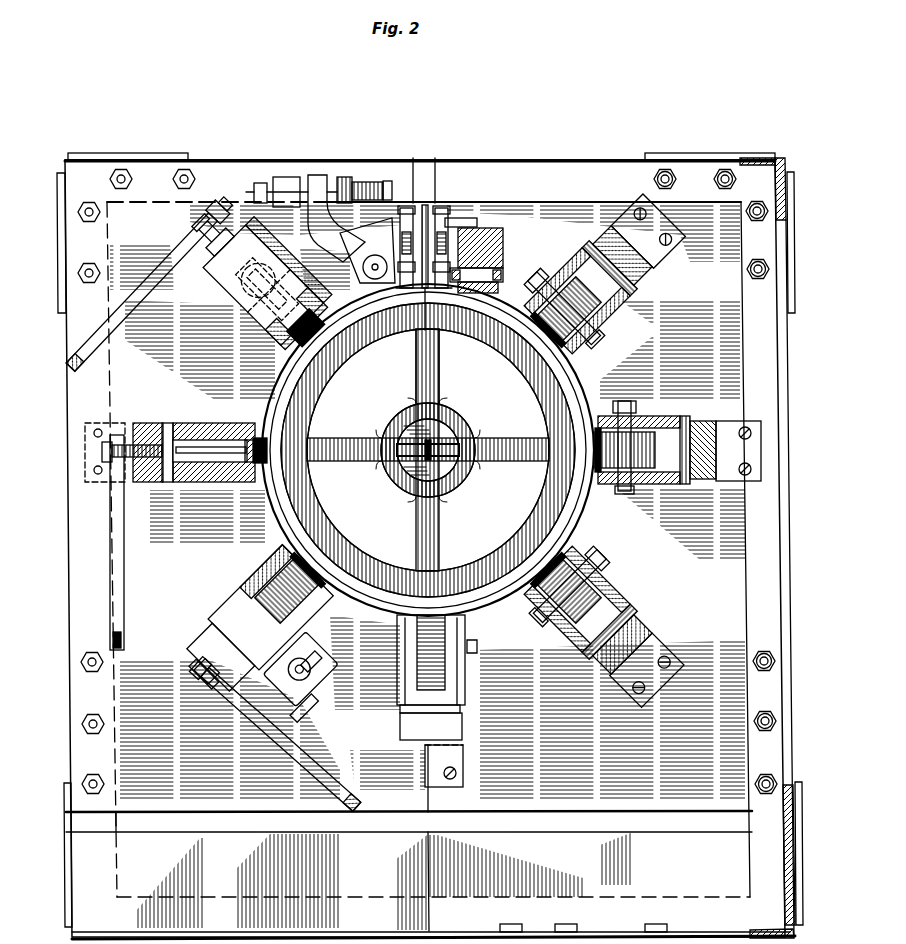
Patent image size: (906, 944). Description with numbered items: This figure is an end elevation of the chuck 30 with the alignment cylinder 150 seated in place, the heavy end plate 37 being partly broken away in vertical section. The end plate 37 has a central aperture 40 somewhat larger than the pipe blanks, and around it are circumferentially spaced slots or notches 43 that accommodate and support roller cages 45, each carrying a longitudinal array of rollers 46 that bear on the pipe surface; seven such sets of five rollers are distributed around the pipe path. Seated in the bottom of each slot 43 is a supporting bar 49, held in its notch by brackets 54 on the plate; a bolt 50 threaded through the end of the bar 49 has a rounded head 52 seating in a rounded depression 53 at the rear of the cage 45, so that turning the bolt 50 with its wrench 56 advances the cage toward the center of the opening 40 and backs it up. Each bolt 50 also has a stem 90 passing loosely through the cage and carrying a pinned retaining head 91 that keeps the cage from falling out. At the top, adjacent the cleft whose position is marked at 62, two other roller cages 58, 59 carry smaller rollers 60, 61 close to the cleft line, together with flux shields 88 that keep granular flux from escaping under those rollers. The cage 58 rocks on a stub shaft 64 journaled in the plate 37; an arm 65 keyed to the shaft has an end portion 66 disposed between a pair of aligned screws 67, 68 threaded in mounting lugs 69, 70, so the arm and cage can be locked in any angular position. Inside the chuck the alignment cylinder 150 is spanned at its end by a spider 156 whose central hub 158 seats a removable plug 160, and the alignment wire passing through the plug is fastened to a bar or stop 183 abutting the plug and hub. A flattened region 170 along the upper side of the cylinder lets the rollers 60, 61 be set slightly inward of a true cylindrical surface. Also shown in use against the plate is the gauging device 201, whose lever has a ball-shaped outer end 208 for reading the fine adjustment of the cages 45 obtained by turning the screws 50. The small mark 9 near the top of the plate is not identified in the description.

The section line 9 is at (453, 168).
The chuck 30 is at (605, 142).
The end plate 37 is at (203, 170).
The central aperture 40 is at (264, 510).
The slots or notches 43 is at (632, 288).
The roller cage 45 is at (210, 405).
The rollers 46 is at (643, 284).
The supporting bar 49 is at (600, 236).
The bolt 50 is at (138, 483).
The rounded head 52 is at (173, 483).
The rounded depression 53 is at (200, 414).
The brackets 54 is at (685, 249).
The wrench 56 is at (118, 575).
The roller cage 58 is at (350, 296).
The roller cage 59 is at (505, 243).
The smaller rollers 60 is at (408, 292).
The smaller rollers 61 is at (453, 293).
The cleft line position 62 is at (428, 312).
The stub shaft 64 is at (367, 250).
The arm 65 is at (252, 247).
The end portion 66 is at (309, 176).
The screw or bolt 67 is at (261, 181).
The screw or bolt 68 is at (370, 182).
The mounting lug 69 is at (285, 176).
The mounting lug 70 is at (343, 176).
The flux shields 88 is at (424, 298).
The stem 90 is at (233, 440).
The retaining head 91 is at (235, 483).
The alignment cylinder 150 is at (488, 540).
The end spider 156 is at (325, 530).
The central hub 158 is at (452, 416).
The removable plug 160 is at (410, 467).
The flattened region 170 is at (440, 303).
The bar or stop 183 is at (463, 462).
The gauging device 201 is at (317, 704).
The outer end of lever 208 is at (273, 647).